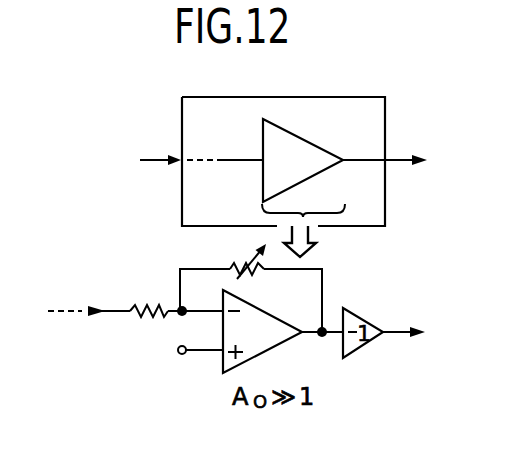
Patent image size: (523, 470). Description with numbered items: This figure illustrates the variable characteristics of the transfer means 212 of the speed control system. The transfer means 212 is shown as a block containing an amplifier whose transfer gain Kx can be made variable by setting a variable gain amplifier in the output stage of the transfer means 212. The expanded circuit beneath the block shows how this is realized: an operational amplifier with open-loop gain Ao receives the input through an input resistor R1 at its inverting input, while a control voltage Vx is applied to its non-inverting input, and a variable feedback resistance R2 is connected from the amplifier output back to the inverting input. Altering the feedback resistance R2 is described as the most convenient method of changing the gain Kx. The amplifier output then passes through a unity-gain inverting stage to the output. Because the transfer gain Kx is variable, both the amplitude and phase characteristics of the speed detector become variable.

The transfer means 212 is at (312, 96).
The transfer gain Kx is at (303, 160).
The input resistor R1 is at (149, 297).
The feedback resistance R2 is at (239, 256).
The control voltage input Vx is at (182, 357).
The operational amplifier with open-loop gain Ao is at (262, 331).